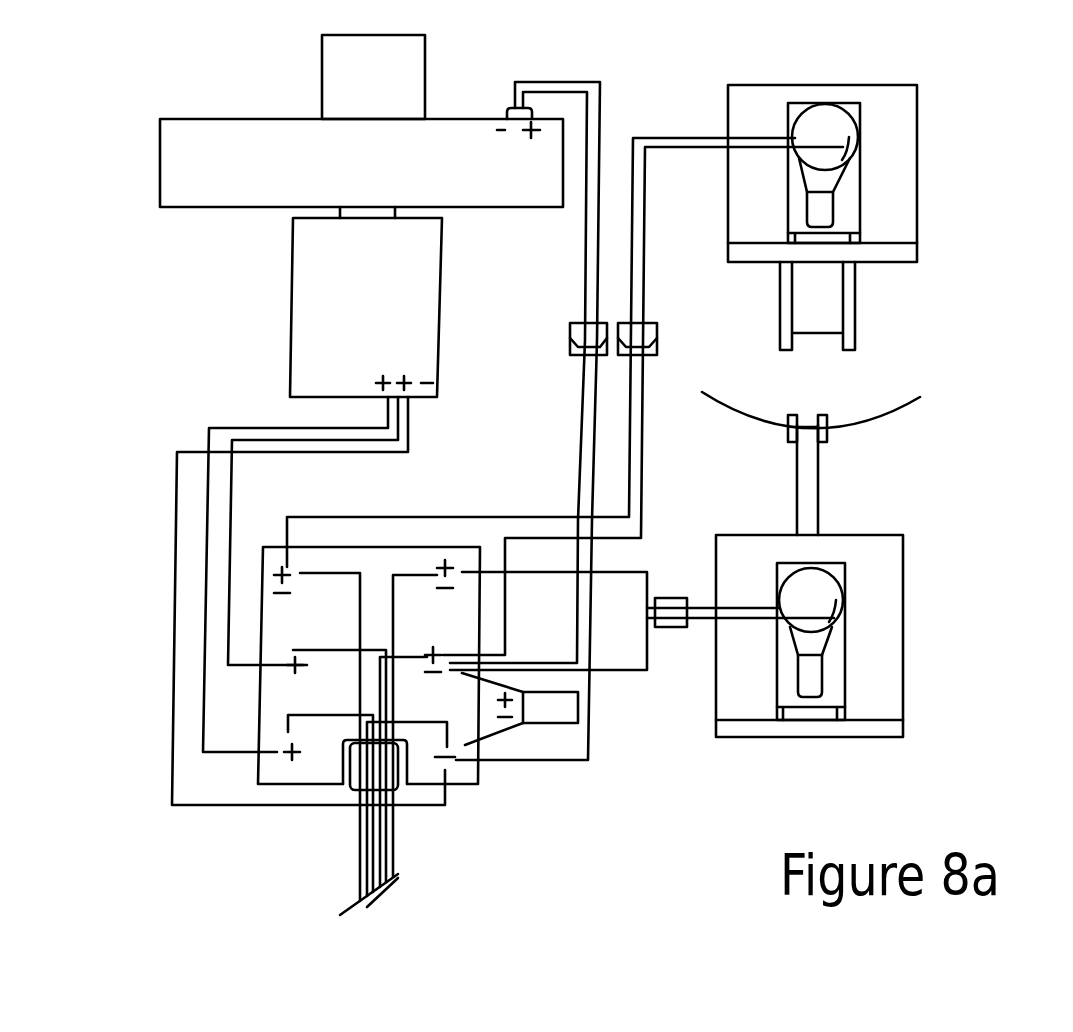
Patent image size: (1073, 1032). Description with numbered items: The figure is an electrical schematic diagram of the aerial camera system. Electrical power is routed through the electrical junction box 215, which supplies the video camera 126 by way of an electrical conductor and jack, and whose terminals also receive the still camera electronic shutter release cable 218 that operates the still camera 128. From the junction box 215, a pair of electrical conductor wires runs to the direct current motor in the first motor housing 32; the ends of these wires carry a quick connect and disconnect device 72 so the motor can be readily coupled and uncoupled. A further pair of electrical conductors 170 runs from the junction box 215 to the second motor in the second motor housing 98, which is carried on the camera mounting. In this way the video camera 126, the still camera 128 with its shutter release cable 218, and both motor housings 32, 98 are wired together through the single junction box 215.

The still camera 128 is at (245, 128).
The video camera 126 is at (413, 333).
The still camera electronic shutter release cable 218 is at (570, 300).
The quick connect and disconnect device 72 is at (648, 323).
The first motor housing 32 is at (927, 170).
The second motor housing 98 is at (912, 603).
The electrical conductors 170 is at (681, 598).
The electrical junction box 215 is at (423, 773).